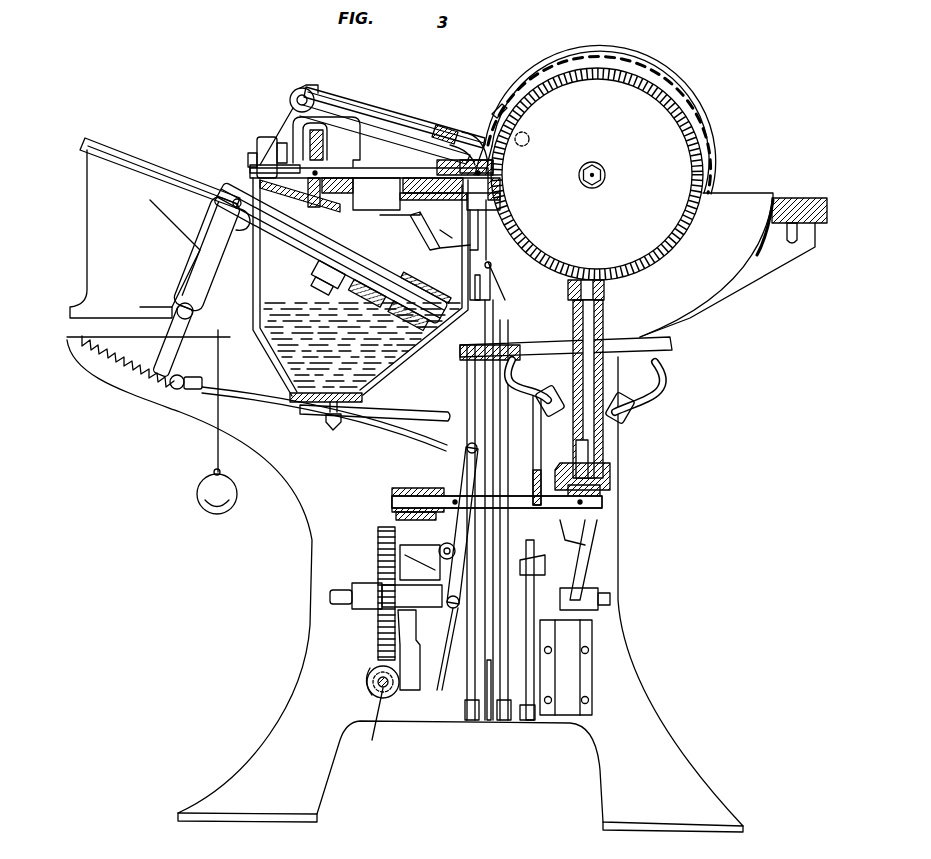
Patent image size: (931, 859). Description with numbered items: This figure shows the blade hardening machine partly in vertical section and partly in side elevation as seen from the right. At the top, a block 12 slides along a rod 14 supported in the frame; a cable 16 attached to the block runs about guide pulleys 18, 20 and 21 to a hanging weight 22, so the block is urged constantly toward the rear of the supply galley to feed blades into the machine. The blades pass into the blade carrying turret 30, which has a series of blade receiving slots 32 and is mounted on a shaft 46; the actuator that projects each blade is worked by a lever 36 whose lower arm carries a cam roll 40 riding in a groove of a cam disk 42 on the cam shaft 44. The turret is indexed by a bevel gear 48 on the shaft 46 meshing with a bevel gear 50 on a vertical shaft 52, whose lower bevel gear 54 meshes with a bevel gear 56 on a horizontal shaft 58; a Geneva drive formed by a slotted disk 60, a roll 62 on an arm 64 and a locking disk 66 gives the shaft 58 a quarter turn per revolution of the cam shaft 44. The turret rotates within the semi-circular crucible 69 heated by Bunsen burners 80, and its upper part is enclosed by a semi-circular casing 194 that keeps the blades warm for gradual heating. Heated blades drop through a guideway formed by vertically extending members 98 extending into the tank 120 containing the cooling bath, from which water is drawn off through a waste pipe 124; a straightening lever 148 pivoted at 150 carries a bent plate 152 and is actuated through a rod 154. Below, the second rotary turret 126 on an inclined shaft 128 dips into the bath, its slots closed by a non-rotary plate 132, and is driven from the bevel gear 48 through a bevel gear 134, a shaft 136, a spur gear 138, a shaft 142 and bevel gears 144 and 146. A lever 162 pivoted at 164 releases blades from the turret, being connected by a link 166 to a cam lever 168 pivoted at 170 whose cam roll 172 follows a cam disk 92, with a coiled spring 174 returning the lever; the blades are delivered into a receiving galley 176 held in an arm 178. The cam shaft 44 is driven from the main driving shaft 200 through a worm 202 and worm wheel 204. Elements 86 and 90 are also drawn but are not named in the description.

The block 12 is at (462, 125).
The rod 14 is at (390, 105).
The cable 16 is at (216, 440).
The guide pulley 18 is at (530, 137).
The guide pulley 20 is at (292, 90).
The guide pulley 21 is at (240, 232).
The weight 22 is at (237, 494).
The blade carrying turret 30 is at (592, 58).
The blade receiving slots 32 is at (505, 110).
The lever 36 is at (478, 340).
The cam roll 40 is at (494, 704).
The cam disk 42 is at (525, 722).
The cam shaft 44 is at (650, 592).
The shaft 46 is at (595, 163).
The bevel gear 48 is at (702, 240).
The bevel gear 50 is at (605, 290).
The vertical shaft 52 is at (605, 320).
The bevel gear 54 is at (605, 476).
The bevel gear 56 is at (578, 530).
The horizontal shaft 58 is at (665, 498).
The slotted disk 60 is at (541, 478).
The roll 62 is at (540, 590).
The arm 64 is at (548, 565).
The disk 66 is at (570, 662).
The crucible 69 is at (700, 308).
The Bunsen burners 80 is at (660, 385).
The rod 86 is at (485, 380).
The rod end 90 is at (470, 685).
The cam disk 92 is at (470, 722).
The vertically extending members 98 is at (495, 208).
The tank 120 is at (258, 357).
The waste pipe 124 is at (398, 396).
The second rotary turret 126 is at (292, 242).
The shaft 128 is at (318, 285).
The non-rotary plate 132 is at (398, 290).
The bevel gear 134 is at (495, 183).
The shaft 136 is at (400, 178).
The spur gear 138 is at (320, 145).
The shaft 142 is at (262, 138).
The bevel gear 144 is at (258, 165).
The bevel gear 146 is at (412, 252).
The lever 148 is at (485, 225).
The pivot 150 is at (498, 258).
The bent plate 152 is at (500, 276).
The rod 154 is at (500, 193).
The lever 162 is at (205, 275).
The pivot 164 is at (178, 308).
The link 166 is at (258, 414).
The cam lever 168 is at (462, 460).
The pivot 170 is at (435, 552).
The cam roll 172 is at (440, 670).
The coiled spring 174 is at (142, 385).
The receiving galley 176 is at (130, 136).
The arm 178 is at (160, 210).
The semi-circular casing 194 is at (545, 75).
The main driving shaft 200 is at (391, 725).
The worm 202 is at (366, 686).
The worm wheel 204 is at (378, 635).